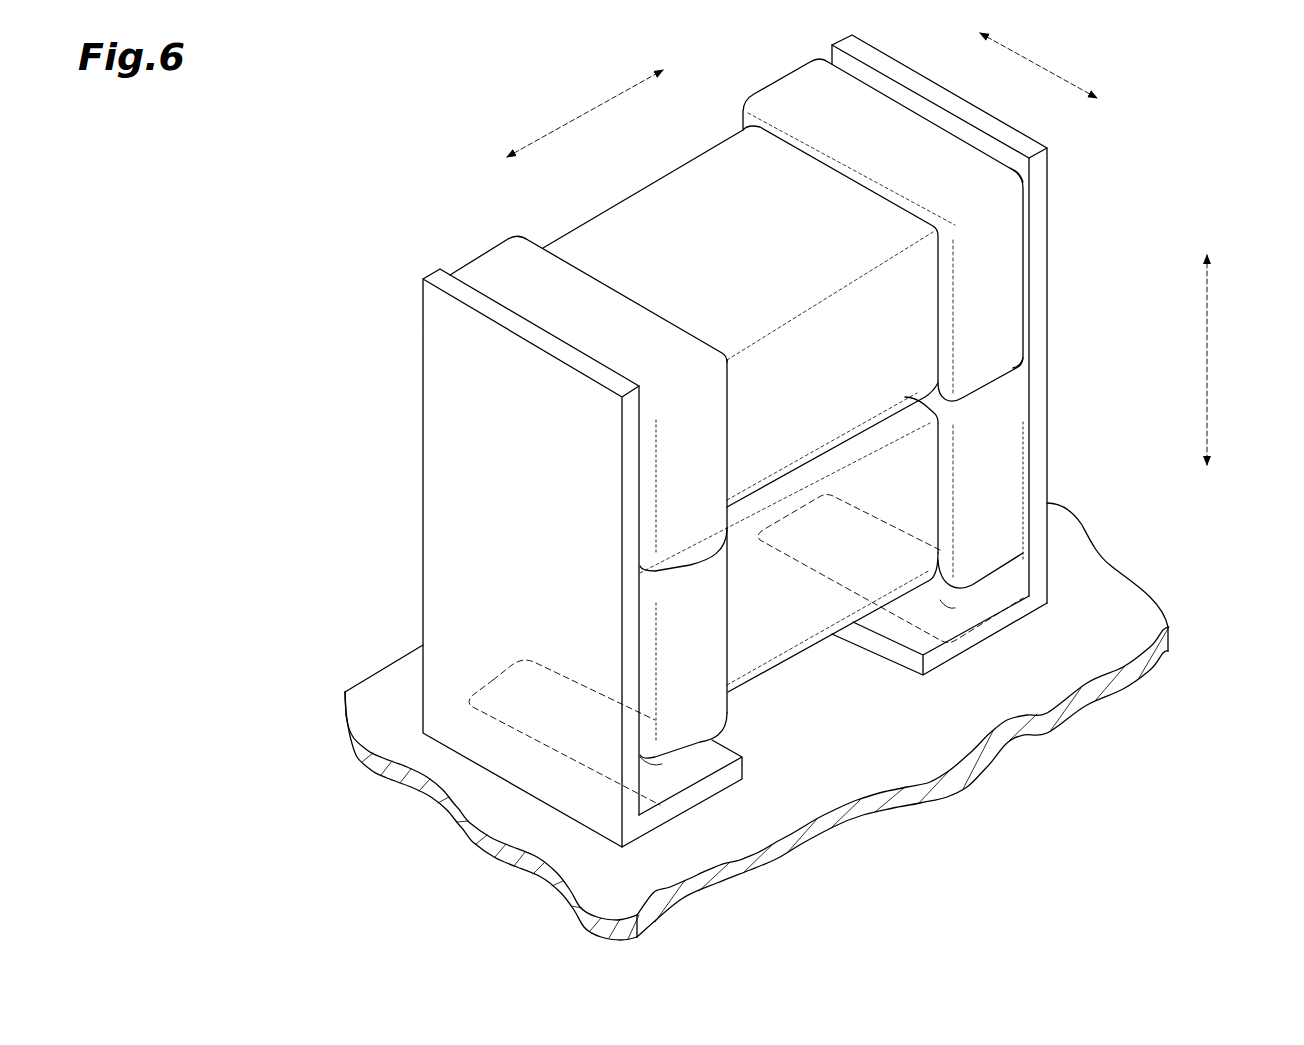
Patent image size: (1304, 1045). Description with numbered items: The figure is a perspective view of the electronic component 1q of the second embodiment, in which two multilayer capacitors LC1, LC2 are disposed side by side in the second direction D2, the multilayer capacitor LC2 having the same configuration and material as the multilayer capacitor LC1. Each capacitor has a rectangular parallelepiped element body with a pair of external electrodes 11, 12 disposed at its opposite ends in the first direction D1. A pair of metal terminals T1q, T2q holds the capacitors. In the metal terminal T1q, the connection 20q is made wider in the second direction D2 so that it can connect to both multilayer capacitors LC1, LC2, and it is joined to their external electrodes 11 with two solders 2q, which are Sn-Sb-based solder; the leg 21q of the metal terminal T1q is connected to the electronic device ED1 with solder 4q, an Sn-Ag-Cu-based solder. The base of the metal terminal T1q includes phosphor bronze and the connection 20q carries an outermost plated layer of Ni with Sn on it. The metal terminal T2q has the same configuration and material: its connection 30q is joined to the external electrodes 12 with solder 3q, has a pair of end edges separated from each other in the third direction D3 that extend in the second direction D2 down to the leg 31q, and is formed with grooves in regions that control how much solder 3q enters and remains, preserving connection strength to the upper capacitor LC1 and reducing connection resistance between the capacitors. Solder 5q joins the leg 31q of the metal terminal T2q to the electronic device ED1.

The electronic component 1q is at (405, 172).
The solder 2q is at (695, 474).
The external electrode 11 is at (497, 262).
The external electrode 12 is at (783, 95).
The solder 3q is at (1017, 163).
The solder 4q is at (673, 733).
The solder joint 5q is at (947, 605).
The metal terminal T1q is at (504, 551).
The metal terminal T2q is at (1002, 355).
The connection 20q is at (483, 447).
The leg 21q is at (505, 730).
The connection 30q is at (1050, 268).
The leg 31q is at (1050, 548).
The electronic device ED1 is at (1157, 640).
The first direction D1 is at (580, 118).
The second direction D2 is at (1207, 360).
The third direction D3 is at (1053, 72).
The multilayer capacitor LC1 is at (642, 173).
The multilayer capacitor LC2 is at (812, 668).